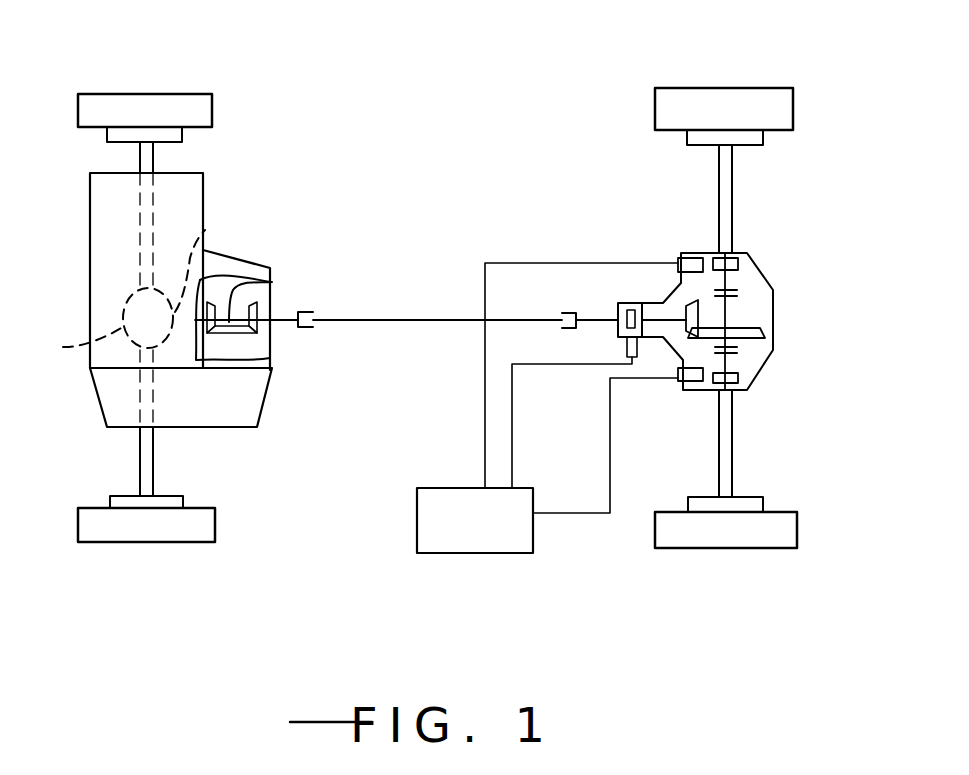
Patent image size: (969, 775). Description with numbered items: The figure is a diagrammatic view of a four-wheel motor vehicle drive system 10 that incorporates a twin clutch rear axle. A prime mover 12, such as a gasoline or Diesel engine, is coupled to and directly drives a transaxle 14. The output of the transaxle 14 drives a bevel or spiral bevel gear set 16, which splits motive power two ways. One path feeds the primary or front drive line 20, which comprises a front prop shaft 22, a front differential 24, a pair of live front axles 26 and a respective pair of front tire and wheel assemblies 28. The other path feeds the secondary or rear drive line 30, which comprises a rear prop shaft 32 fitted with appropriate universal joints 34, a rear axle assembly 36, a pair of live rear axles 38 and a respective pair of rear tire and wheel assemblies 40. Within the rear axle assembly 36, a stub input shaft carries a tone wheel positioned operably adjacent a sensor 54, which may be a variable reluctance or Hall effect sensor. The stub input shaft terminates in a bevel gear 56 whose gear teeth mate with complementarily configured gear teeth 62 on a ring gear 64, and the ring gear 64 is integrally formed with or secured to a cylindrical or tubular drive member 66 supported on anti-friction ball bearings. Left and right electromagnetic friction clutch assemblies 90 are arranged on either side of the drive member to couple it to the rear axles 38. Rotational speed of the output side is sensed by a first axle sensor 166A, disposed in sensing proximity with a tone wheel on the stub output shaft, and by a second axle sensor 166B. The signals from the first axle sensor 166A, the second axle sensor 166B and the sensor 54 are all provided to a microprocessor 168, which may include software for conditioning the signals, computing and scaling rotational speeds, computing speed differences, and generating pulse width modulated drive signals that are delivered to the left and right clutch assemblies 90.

The four-wheel vehicle drive system 10 is at (445, 100).
The prime mover 12 is at (205, 178).
The transaxle 14 is at (255, 402).
The bevel or spiral bevel gear set 16 is at (270, 281).
The primary or front drive line 20 is at (82, 279).
The primary or front prop shaft 22 is at (210, 232).
The primary or front differential 24 is at (105, 318).
The primary or front axles 26 is at (138, 163).
The primary or front tire and wheel assemblies 28 is at (213, 104).
The secondary or rear drive line 30 is at (360, 460).
The secondary or rear prop shaft 32 is at (393, 318).
The universal joints 34 is at (300, 328).
The secondary or rear axle assembly 36 is at (752, 247).
The secondary or rear axles 38 is at (735, 173).
The secondary or rear tire and wheel assemblies 40 is at (793, 102).
The sensor 54 is at (618, 346).
The bevel gear 56 is at (690, 289).
The gear teeth 62 is at (773, 323).
The ring gear 64 is at (750, 340).
The cylindrical or tubular drive member 66 is at (727, 312).
The electromagnetic friction clutch assemblies 90 is at (750, 278).
The first axle sensor 166A is at (692, 384).
The second axle sensor 166B is at (690, 258).
The microprocessor 168 is at (496, 528).